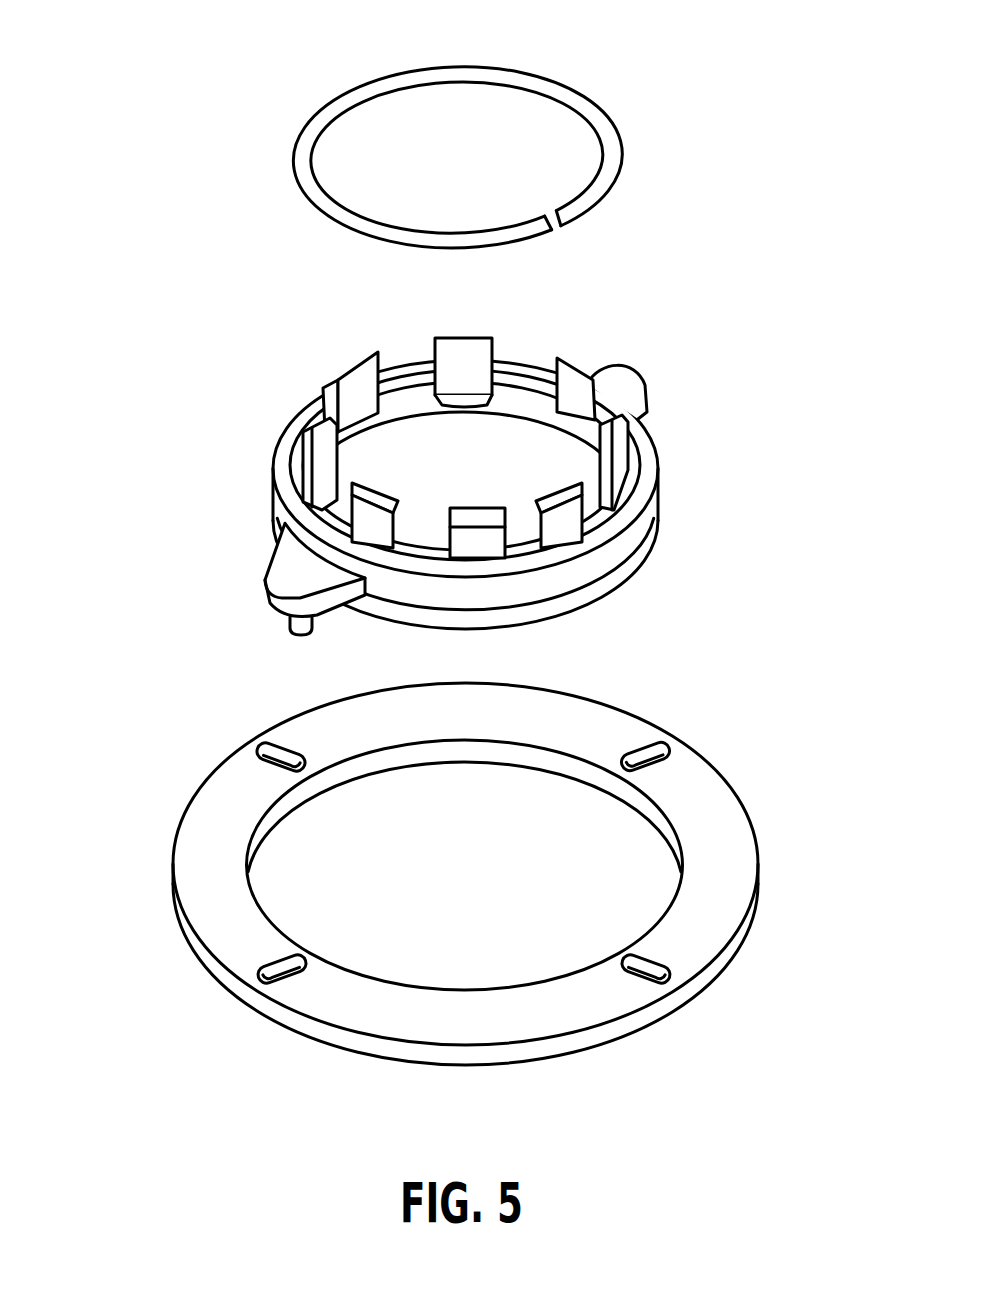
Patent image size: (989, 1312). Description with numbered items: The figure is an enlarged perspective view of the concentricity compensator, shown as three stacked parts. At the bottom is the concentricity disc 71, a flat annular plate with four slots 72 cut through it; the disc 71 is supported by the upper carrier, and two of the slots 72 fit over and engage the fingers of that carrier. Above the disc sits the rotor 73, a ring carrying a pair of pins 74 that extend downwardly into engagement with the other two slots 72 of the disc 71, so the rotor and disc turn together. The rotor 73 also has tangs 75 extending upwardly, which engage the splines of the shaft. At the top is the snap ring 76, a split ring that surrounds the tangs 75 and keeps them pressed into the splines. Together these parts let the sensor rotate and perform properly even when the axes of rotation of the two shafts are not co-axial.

The concentricity disc 71 is at (192, 877).
The slots 72 is at (652, 952).
The rotor 73 is at (652, 513).
The pins 74 is at (292, 631).
The tangs 75 is at (343, 368).
The snap ring 76 is at (340, 97).